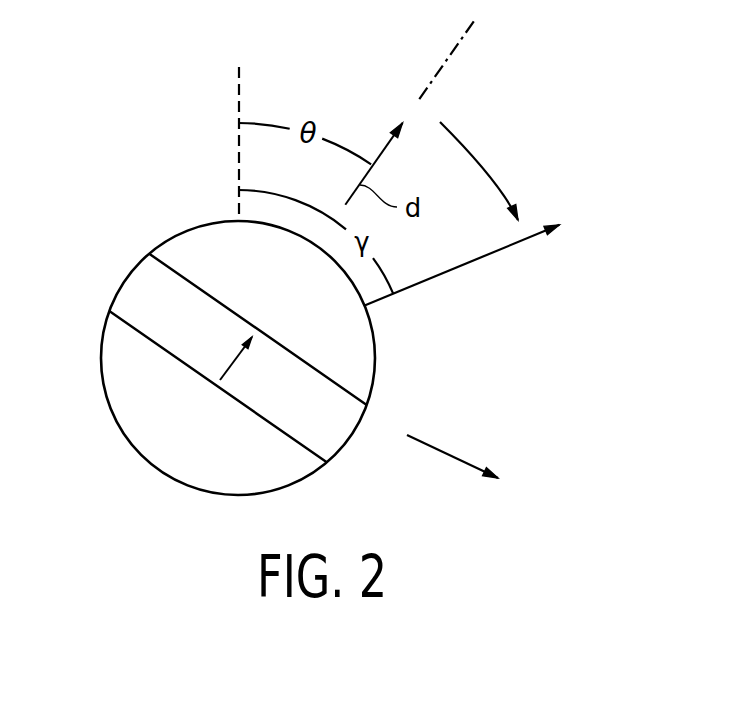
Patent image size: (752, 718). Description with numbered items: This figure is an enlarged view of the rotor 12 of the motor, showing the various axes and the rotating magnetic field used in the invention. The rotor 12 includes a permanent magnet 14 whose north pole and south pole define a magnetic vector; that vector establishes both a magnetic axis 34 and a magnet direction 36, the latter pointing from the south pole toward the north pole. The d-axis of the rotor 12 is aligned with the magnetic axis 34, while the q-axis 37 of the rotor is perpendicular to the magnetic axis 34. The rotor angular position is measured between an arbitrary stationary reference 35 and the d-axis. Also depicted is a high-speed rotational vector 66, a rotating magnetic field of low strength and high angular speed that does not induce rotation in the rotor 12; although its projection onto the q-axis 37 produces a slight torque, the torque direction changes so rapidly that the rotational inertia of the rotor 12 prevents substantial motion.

The rotor 12 is at (238, 497).
The permanent magnet 14 is at (168, 285).
The magnetic axis 34 is at (460, 38).
The reference axis 35 is at (240, 88).
The magnet direction 36 is at (232, 367).
The q-axis 37 is at (448, 452).
The high-speed rotational vector 66 is at (490, 260).